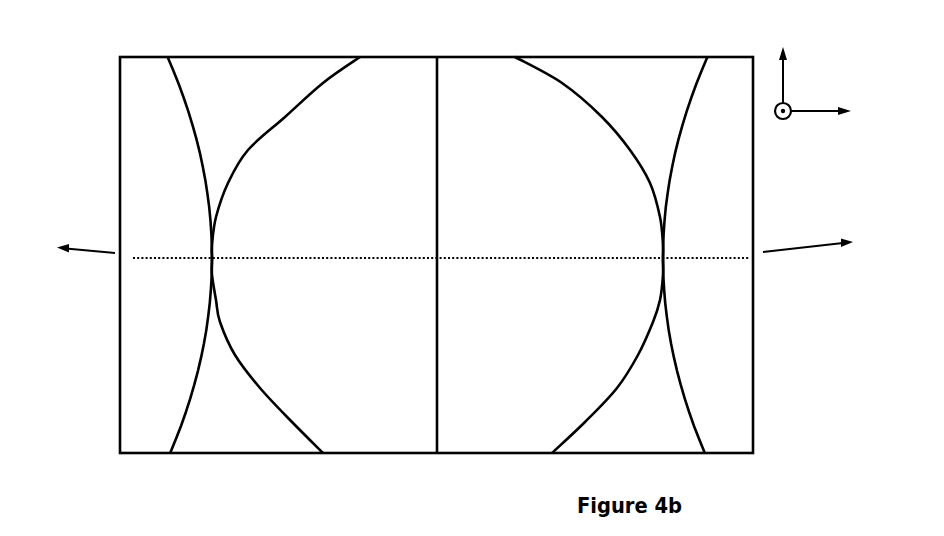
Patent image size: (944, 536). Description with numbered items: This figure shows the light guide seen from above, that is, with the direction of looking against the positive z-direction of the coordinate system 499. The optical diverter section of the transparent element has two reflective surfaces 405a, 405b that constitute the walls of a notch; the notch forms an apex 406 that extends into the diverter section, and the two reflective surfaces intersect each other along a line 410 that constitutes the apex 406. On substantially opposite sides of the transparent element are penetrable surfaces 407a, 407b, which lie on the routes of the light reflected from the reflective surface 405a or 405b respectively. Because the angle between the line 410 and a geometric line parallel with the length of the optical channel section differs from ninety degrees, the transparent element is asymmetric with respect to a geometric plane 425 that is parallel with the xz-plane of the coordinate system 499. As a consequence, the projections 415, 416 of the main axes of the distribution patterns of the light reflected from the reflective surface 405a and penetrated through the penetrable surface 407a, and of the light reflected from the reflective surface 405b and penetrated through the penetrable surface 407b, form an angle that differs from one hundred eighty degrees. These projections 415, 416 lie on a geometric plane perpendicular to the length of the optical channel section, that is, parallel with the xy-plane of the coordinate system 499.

The reflective surface 405a is at (338, 236).
The reflective surface 405b is at (582, 194).
The penetrable surface 407a is at (180, 198).
The penetrable surface 407b is at (732, 216).
The apex 406 is at (437, 120).
The line 410 is at (437, 330).
The geometric plane 425 is at (497, 260).
The projection 415 is at (83, 252).
The projection 416 is at (807, 250).
The coordinate system 499 is at (842, 84).